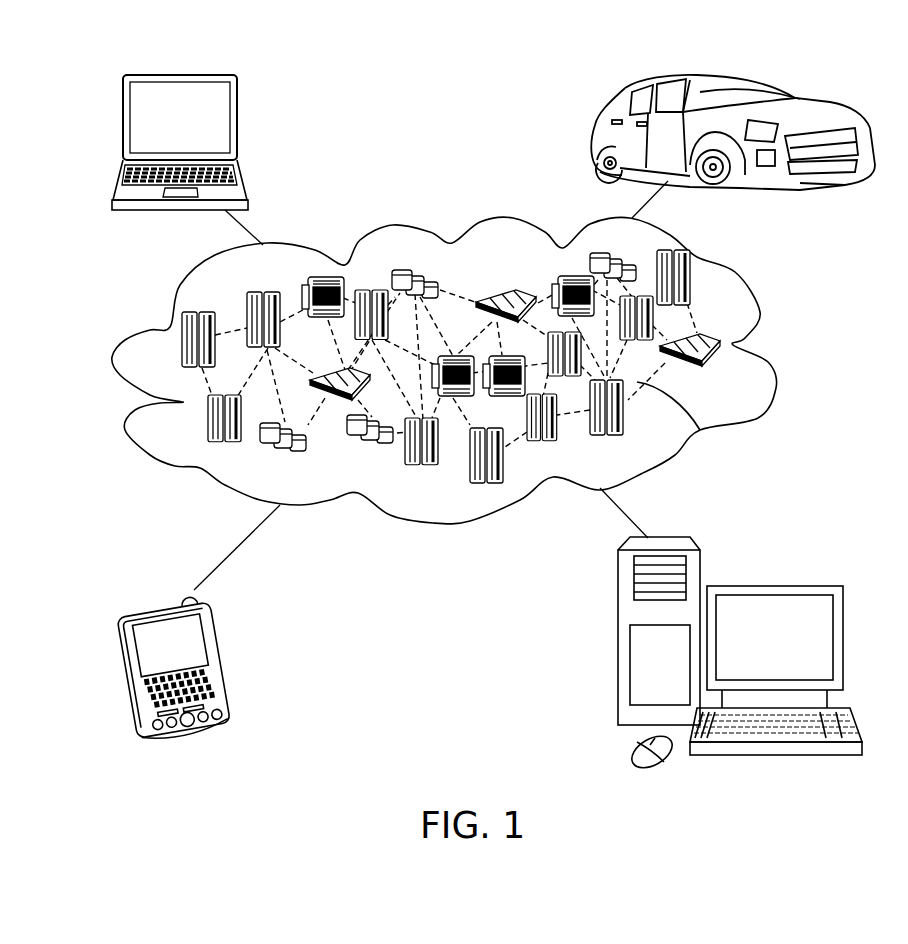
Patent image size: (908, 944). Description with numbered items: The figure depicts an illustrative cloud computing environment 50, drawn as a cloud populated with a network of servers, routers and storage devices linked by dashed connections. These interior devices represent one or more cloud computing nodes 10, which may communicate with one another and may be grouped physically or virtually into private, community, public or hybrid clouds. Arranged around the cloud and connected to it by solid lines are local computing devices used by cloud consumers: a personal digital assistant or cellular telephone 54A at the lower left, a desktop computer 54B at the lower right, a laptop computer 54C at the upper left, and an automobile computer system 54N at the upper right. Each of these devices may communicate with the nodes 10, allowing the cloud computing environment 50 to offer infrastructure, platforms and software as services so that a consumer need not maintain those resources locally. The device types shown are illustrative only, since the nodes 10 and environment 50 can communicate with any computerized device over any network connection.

The cloud computing node 10 is at (740, 375).
The cloud computing environment 50 is at (772, 345).
The personal digital assistant or cellular telephone 54A is at (228, 658).
The desktop computer 54B is at (773, 583).
The laptop computer 54C is at (238, 120).
The automobile computer system 54N is at (593, 132).